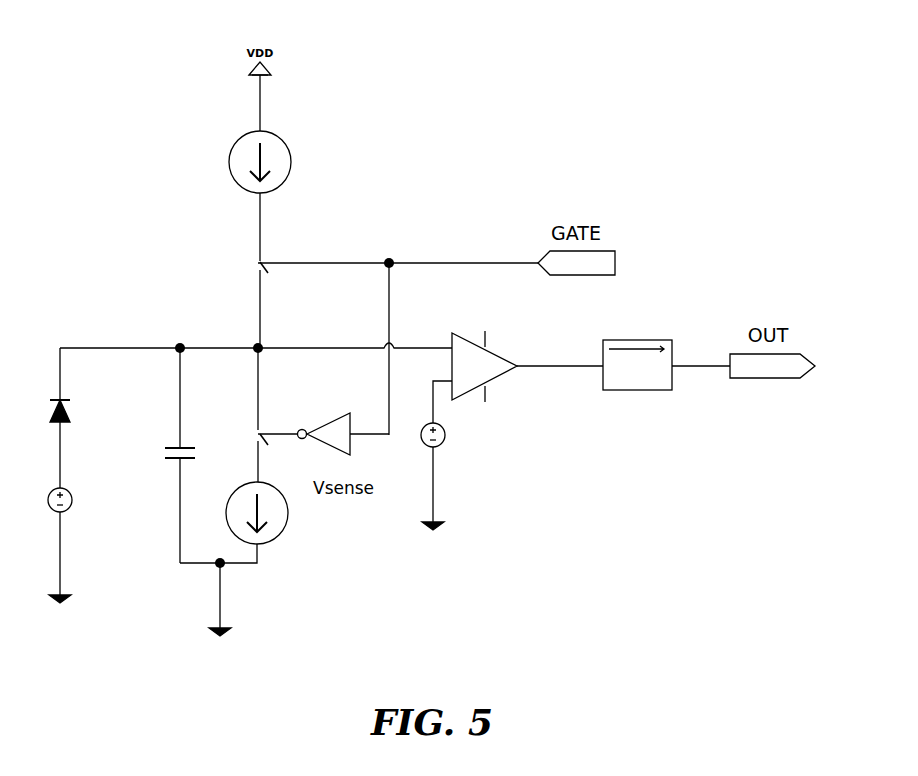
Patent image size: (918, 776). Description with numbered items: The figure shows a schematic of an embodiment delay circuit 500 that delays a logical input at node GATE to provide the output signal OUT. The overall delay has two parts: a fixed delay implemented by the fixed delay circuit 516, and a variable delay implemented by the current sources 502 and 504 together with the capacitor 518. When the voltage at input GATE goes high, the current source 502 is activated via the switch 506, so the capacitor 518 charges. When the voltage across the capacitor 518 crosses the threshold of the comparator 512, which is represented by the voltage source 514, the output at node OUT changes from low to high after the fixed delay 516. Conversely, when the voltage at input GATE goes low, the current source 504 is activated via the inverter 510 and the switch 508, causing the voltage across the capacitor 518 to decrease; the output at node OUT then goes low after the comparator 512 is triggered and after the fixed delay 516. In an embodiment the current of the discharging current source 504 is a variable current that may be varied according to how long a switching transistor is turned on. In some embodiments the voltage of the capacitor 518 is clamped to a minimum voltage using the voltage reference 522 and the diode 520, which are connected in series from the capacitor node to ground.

The delay circuit 500 is at (114, 68).
The current source 502 is at (236, 140).
The current source 504 is at (272, 536).
The switch 506 is at (252, 258).
The switch 508 is at (252, 428).
The inverter 510 is at (346, 412).
The comparator 512 is at (458, 331).
The voltage source 514 is at (443, 447).
The fixed delay circuit 516 is at (626, 339).
The capacitor 518 is at (170, 449).
The diode 520 is at (49, 412).
The voltage reference 522 is at (49, 496).